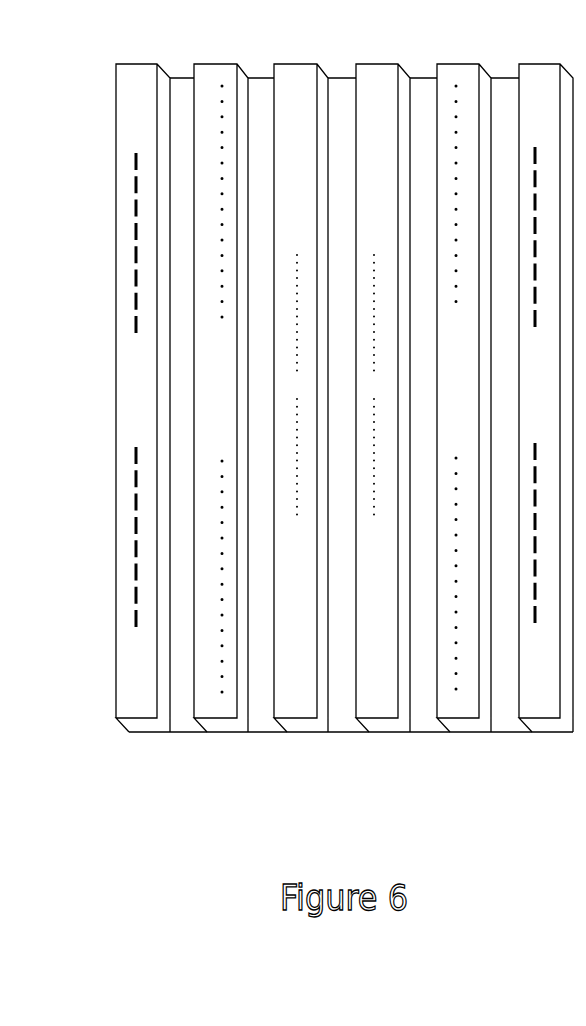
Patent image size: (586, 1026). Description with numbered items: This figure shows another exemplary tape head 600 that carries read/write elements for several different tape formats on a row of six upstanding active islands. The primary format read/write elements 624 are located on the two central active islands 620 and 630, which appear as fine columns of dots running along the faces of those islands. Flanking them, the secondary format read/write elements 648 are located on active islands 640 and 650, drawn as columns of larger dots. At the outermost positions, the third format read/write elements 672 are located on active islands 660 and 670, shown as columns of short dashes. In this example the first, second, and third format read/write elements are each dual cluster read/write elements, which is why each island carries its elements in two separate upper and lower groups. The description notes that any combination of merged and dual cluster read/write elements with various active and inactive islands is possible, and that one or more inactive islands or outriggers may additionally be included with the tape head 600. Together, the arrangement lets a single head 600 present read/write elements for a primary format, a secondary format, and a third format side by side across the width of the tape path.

The tape head 600 is at (307, 411).
The active island 670 is at (110, 434).
The active island 650 is at (145, 434).
The active island 630 is at (186, 434).
The active island 620 is at (380, 707).
The active island 640 is at (464, 707).
The active island 660 is at (541, 707).
The third format read/write elements 672 is at (127, 312).
The primary format read/write elements 624 is at (291, 342).
The secondary format read/write elements 648 is at (214, 464).